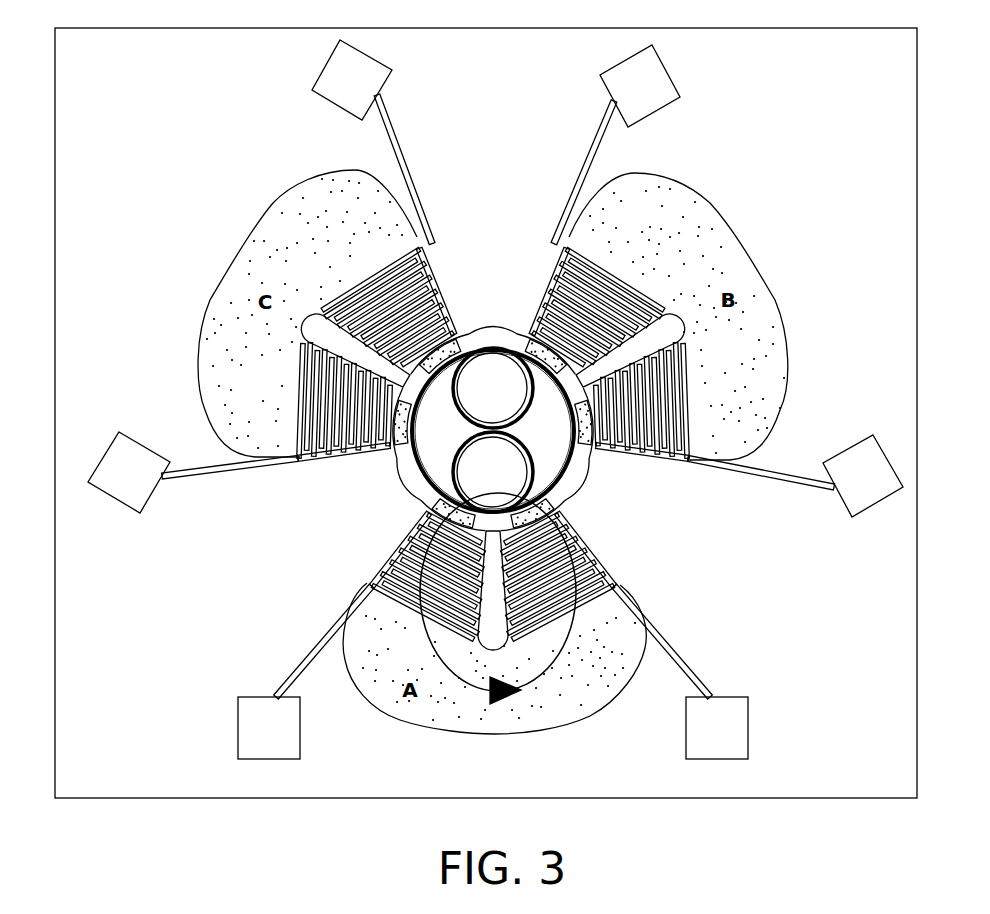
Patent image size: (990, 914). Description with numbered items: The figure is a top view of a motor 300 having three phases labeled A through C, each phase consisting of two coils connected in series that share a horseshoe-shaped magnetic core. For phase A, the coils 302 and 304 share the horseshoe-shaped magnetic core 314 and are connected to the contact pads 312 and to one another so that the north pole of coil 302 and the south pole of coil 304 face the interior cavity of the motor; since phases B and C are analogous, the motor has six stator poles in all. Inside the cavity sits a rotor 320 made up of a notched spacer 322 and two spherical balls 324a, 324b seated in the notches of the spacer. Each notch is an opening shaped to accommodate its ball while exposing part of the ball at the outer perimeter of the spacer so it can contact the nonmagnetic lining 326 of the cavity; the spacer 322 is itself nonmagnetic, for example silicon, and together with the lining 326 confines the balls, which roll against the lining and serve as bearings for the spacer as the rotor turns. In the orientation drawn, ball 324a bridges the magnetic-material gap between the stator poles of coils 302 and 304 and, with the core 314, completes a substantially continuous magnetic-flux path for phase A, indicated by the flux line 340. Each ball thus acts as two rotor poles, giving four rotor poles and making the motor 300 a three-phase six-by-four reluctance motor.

The motor 300 is at (945, 737).
The coil 302 is at (582, 537).
The coil 304 is at (404, 536).
The contact pads 312 is at (250, 740).
The horseshoe-shaped magnetic core 314 is at (488, 730).
The rotor 320 is at (499, 316).
The notched spacer 322 is at (529, 438).
The spherical ball 324a is at (517, 473).
The spherical ball 324b is at (517, 389).
The nonmagnetic lining 326 is at (426, 468).
The flux line 340 is at (571, 668).